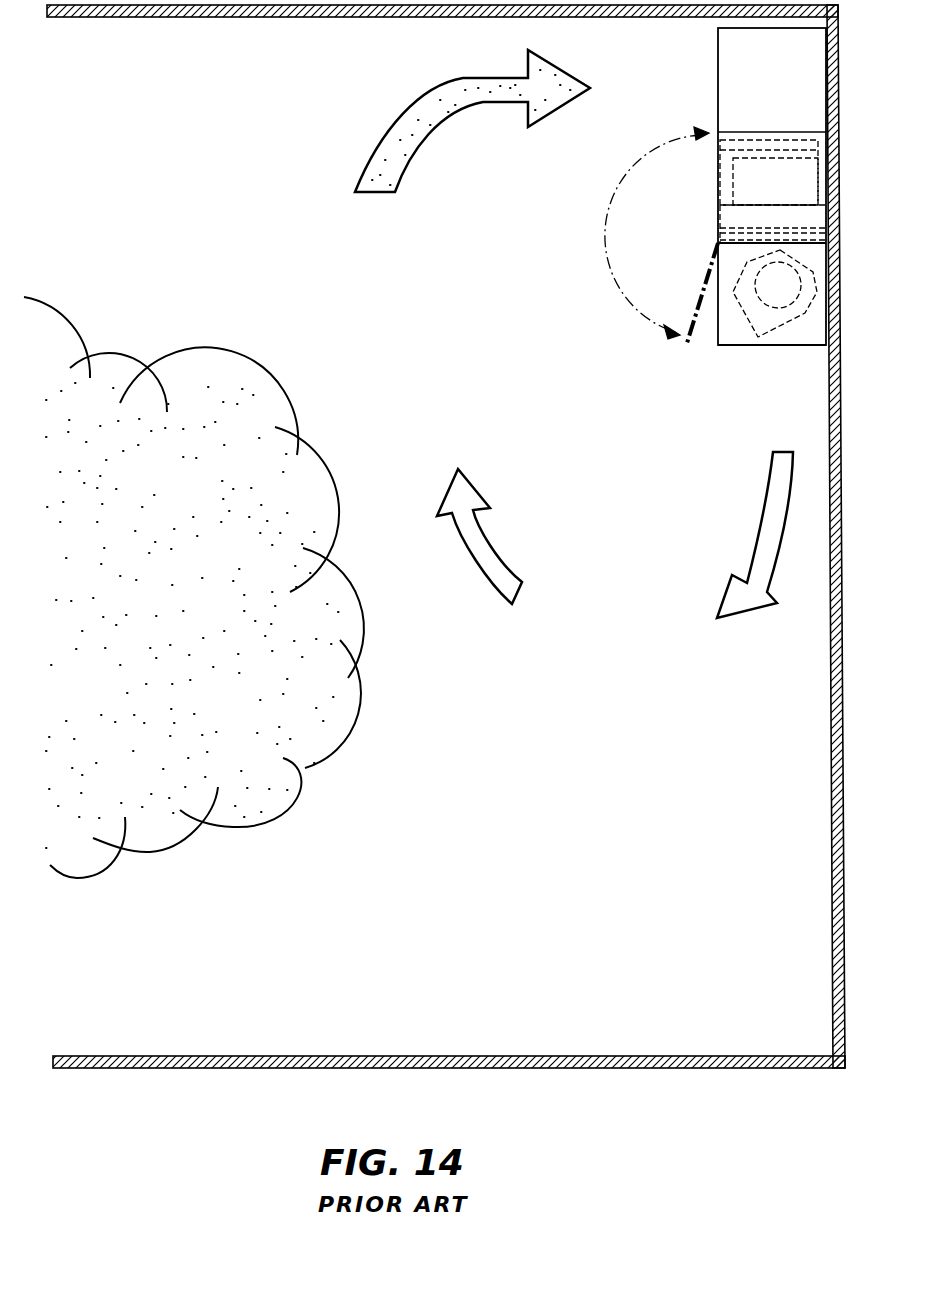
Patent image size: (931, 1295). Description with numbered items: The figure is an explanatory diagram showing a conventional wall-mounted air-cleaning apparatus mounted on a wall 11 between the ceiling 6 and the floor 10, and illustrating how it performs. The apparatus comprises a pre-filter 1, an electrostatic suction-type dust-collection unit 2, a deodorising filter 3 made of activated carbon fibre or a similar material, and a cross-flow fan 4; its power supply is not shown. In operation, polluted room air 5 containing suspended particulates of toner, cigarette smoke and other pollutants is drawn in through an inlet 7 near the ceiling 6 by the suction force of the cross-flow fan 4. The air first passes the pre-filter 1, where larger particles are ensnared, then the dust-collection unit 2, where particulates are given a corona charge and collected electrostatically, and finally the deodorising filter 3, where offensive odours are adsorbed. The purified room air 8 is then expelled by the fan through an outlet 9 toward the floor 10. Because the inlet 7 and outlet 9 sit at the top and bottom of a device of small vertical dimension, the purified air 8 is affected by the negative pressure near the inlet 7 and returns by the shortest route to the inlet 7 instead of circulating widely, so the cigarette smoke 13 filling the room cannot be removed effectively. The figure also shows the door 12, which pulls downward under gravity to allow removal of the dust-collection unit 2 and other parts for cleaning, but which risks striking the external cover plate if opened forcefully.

The pre-filter 1 is at (758, 140).
The electrostatic suction-type dust-collection unit 2 is at (740, 178).
The deodorising filter 3 is at (718, 240).
The cross-flow fan 4 is at (775, 297).
The polluted room air 5 is at (437, 85).
The ceiling 6 is at (121, 17).
The inlet 7 is at (723, 60).
The purified room air 8 is at (477, 557).
The outlet 9 is at (750, 347).
The floor 10 is at (480, 1056).
The wall 11 is at (833, 928).
The door 12 is at (687, 340).
The cigarette smoke 13 is at (215, 378).